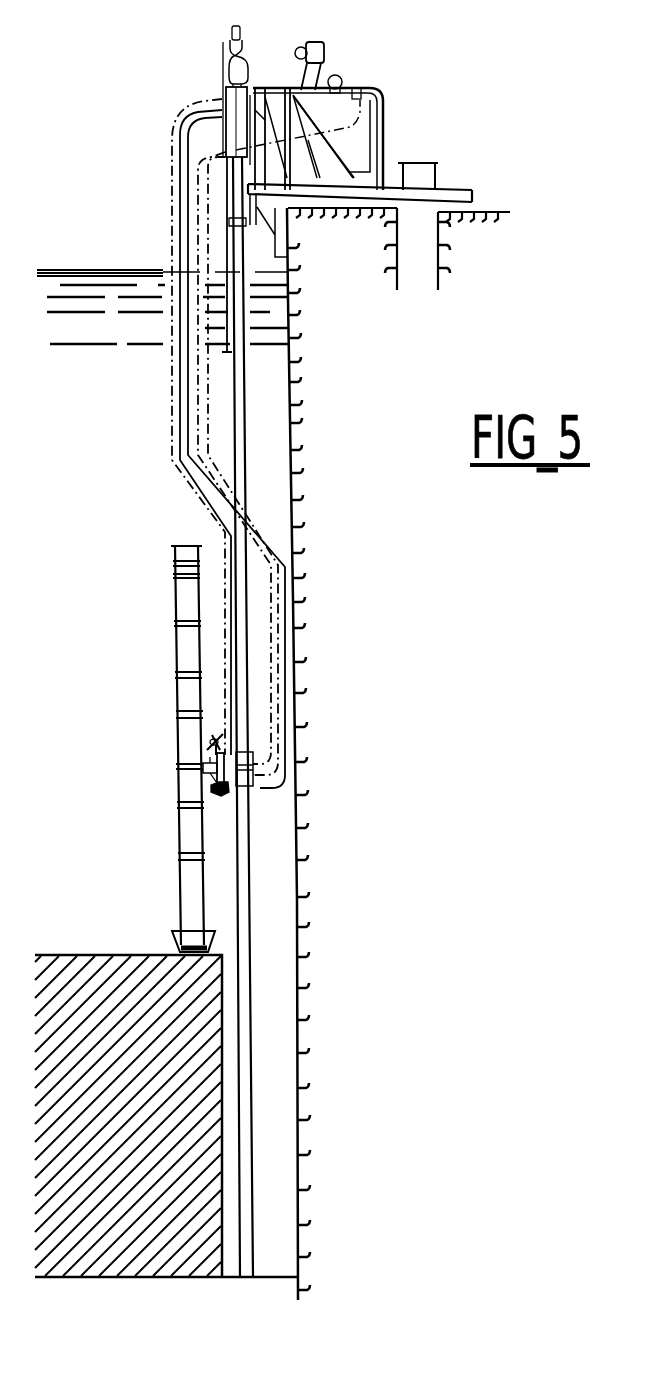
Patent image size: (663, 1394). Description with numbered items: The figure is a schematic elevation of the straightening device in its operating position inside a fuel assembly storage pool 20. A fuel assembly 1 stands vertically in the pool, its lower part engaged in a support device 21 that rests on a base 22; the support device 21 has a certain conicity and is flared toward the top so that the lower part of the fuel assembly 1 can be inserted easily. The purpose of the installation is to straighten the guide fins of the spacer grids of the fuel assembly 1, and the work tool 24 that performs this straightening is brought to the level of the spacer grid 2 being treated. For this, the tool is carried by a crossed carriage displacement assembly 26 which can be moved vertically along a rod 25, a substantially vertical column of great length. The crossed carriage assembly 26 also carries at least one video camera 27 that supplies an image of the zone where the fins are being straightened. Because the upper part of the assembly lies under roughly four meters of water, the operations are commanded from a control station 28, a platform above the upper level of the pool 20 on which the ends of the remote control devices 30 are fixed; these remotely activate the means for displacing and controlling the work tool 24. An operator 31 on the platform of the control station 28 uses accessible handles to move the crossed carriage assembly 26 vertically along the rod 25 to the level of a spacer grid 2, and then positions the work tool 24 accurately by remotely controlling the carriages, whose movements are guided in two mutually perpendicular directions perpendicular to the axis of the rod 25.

The fuel assembly 1 is at (171, 668).
The spacer grid 2 is at (180, 624).
The fuel assembly storage pool 20 is at (162, 307).
The support device 21 is at (178, 944).
The base 22 is at (166, 1116).
The work tool 24 is at (208, 778).
The rod 25 is at (290, 388).
The crossed carriage displacement assembly 26 is at (223, 795).
The video camera 27 is at (210, 737).
The control station 28 is at (396, 112).
The remote control devices 30 is at (225, 478).
The operator 31 is at (322, 70).